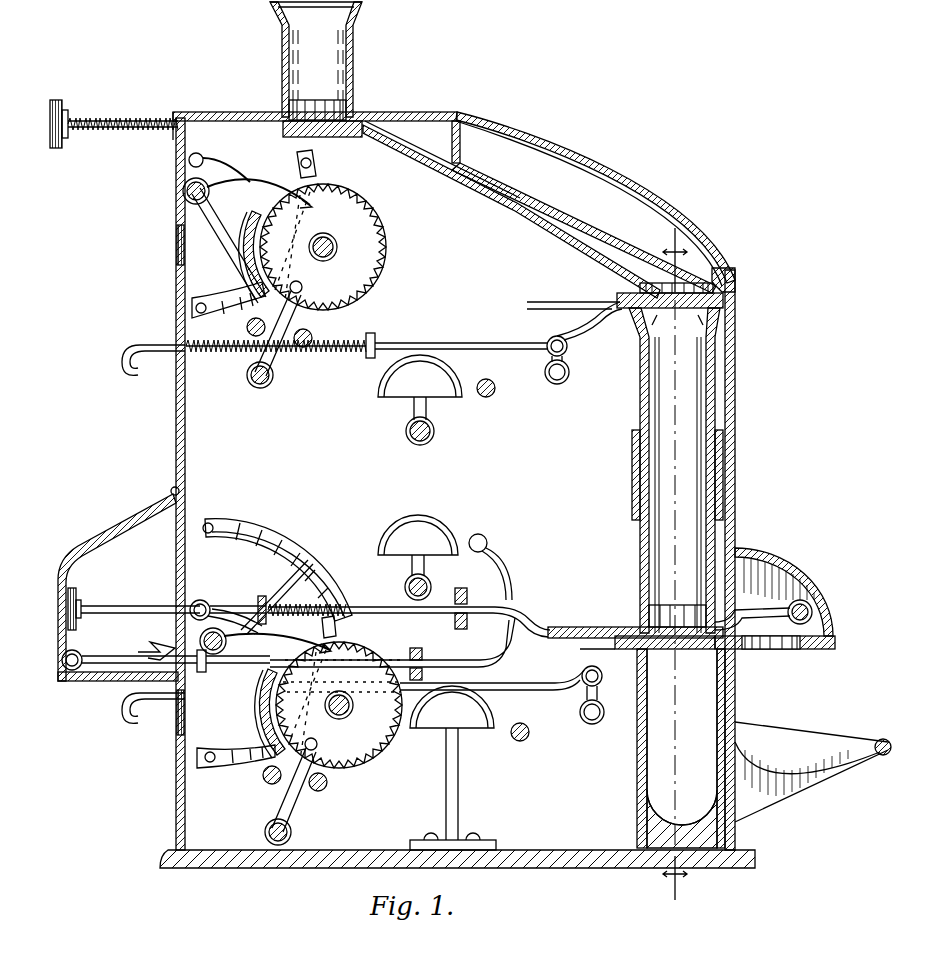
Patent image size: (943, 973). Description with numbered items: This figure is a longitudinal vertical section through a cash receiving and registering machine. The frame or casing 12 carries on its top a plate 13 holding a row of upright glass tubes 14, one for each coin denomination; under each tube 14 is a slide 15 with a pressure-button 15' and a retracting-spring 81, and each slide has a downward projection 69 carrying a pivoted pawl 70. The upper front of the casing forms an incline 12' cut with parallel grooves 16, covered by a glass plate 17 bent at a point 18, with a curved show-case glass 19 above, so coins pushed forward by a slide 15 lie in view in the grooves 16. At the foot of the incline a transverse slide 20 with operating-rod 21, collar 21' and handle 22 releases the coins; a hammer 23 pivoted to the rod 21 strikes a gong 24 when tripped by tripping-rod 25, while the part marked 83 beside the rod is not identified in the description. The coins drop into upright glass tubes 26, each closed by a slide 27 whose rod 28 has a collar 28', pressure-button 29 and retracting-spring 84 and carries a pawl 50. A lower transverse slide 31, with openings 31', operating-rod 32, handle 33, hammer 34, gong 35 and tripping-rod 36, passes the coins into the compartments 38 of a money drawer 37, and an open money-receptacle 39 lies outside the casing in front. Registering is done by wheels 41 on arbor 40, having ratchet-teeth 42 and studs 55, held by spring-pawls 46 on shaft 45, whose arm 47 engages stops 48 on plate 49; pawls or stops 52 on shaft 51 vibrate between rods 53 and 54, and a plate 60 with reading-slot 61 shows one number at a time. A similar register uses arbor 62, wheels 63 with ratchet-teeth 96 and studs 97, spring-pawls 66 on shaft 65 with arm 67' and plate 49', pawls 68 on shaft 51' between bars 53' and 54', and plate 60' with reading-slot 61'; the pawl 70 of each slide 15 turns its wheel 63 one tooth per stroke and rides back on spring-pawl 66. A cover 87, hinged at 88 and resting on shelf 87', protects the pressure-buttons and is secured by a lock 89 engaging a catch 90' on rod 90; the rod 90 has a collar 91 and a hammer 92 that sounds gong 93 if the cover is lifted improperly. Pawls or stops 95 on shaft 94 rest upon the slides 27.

The frame or casing 12 is at (434, 484).
The incline 12' is at (509, 246).
The plate 13 is at (275, 121).
The tubes 14 is at (355, 70).
The slide 15 is at (303, 139).
The pressure-button 15' is at (76, 119).
The grooves 16 is at (405, 150).
The glass plate 17 is at (540, 222).
The bend point 18 is at (630, 266).
The show-case glass 19 is at (640, 176).
The transverse slide 20 is at (622, 310).
The operating-rod 21 is at (461, 336).
The collar 21' is at (386, 337).
The handle 22 is at (118, 358).
The hammer 23 is at (570, 374).
The gong 24 is at (450, 378).
The tripping-rod 25 is at (496, 392).
The tubes 26 is at (640, 408).
The slide 27 is at (592, 626).
The operating-rod 28 is at (447, 614).
The collar 28' is at (228, 603).
The pressure-button 29 is at (80, 598).
The transverse slide 31 is at (647, 668).
The circular openings 31' is at (775, 653).
The operating-rod 32 is at (510, 686).
The handle 33 is at (124, 716).
The hammer 34 is at (604, 714).
The gong 35 is at (478, 716).
The tripping-rod 36 is at (530, 734).
The money drawer 37 is at (637, 792).
The money compartments 38 is at (681, 748).
The money-receptacle 39 is at (813, 772).
The arbor 40 is at (353, 705).
The register-wheels 41 is at (359, 730).
The ratchet-teeth 42 is at (380, 757).
The shaft 45 is at (226, 648).
The spring-pawls 46 is at (290, 640).
The arm 47 is at (288, 585).
The stops 48 is at (258, 542).
The plate 49 is at (277, 558).
The plate 49' is at (228, 296).
The pawl 50 is at (242, 628).
The shaft 51 is at (291, 832).
The shaft 51' is at (276, 376).
The pawls or stops 52 is at (298, 804).
The transverse rod 53 is at (334, 783).
The transverse bar 53' is at (321, 330).
The transverse rod 54 is at (254, 778).
The transverse bar 54' is at (240, 325).
The stud 55 is at (318, 742).
The plate 60 is at (241, 718).
The plate 60' is at (246, 254).
The reading-slot 61 is at (250, 714).
The reading-slot 61' is at (242, 256).
The arbor 62 is at (337, 245).
The register-wheels 63 is at (354, 267).
The shaft 65 is at (210, 194).
The spring-pawls 66 is at (262, 190).
The arm 67' is at (229, 245).
The pawls or stops 68 is at (280, 360).
The downward projection 69 is at (204, 156).
The pawl 70 is at (220, 168).
The retracting-spring 81 is at (100, 136).
The spring 83 is at (338, 352).
The retracting-spring 84 is at (360, 606).
The cover 87 is at (117, 587).
The shelf 87' is at (118, 687).
The hinge 88 is at (170, 491).
The lock 89 is at (110, 660).
The rod 90 is at (392, 649).
The catch 90' is at (147, 644).
The collar 91 is at (206, 668).
The hammer 92 is at (488, 542).
The gong 93 is at (445, 528).
The shaft 94 is at (792, 620).
The pawls or stops 95 is at (748, 610).
The ratchet-teeth 96 is at (383, 265).
The studs 97 is at (309, 290).